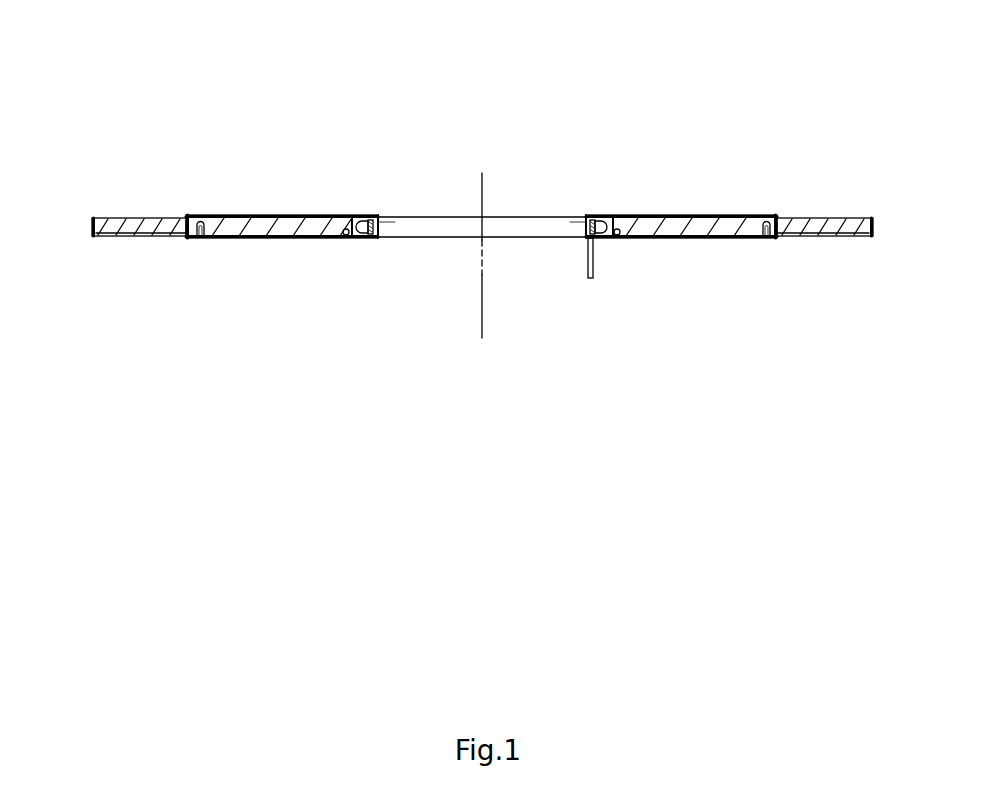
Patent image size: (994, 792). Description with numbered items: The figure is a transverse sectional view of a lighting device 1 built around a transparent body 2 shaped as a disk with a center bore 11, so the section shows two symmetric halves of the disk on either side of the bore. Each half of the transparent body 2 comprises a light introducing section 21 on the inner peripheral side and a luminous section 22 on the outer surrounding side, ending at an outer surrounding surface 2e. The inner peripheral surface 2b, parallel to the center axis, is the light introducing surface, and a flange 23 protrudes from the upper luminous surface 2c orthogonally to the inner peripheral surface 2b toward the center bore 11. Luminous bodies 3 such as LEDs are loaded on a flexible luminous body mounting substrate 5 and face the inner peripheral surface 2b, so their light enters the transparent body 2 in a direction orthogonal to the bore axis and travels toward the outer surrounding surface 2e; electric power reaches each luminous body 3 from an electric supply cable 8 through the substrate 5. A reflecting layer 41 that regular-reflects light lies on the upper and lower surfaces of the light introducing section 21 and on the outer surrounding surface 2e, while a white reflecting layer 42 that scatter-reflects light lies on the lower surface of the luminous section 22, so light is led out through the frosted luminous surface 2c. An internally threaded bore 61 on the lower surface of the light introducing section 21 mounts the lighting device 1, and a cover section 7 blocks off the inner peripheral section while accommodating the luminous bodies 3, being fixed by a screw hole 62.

The lighting device 1 is at (230, 116).
The transparent body 2 is at (261, 196).
The inner peripheral surface 2b is at (370, 216).
The luminous surface 2c is at (176, 217).
The outer surrounding surface 2e is at (88, 234).
The luminous body 3 is at (350, 220).
The luminous body mounting substrate 5 is at (381, 228).
The cover section 7 is at (433, 216).
The electric supply cable 8 is at (596, 272).
The center bore 11 is at (456, 225).
The light introducing section 21 is at (305, 224).
The luminous section 22 is at (130, 226).
The flange 23 is at (380, 218).
The reflecting layer 41 is at (240, 213).
The reflecting layer 42 is at (120, 240).
The internally threaded bore 61 is at (200, 239).
The screw hole 62 is at (347, 236).